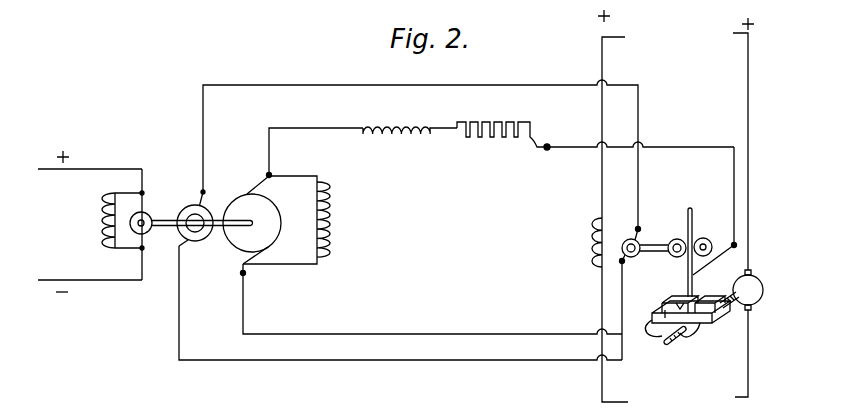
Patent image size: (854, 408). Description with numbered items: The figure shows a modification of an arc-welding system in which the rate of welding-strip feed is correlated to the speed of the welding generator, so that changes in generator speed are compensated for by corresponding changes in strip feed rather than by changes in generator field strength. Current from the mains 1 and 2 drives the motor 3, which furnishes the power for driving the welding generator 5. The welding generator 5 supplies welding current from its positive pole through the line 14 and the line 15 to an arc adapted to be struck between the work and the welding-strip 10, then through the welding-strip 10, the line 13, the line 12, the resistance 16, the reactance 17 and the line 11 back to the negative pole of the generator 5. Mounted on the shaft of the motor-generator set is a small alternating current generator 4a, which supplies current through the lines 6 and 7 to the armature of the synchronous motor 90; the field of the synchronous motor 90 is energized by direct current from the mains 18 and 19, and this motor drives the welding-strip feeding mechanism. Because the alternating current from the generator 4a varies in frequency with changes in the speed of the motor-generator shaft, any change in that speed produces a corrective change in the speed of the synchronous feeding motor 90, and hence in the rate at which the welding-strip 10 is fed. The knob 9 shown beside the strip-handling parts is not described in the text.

The main 1 is at (114, 169).
The main 2 is at (123, 283).
The motor 3 is at (150, 215).
The alternating current generator 4a is at (197, 242).
The welding generator 5 is at (279, 205).
The line 6 is at (358, 85).
The line 7 is at (385, 361).
The switch knob 9 is at (722, 300).
The welding-strip 10 is at (687, 226).
The line 11 is at (330, 128).
The line 12 is at (588, 150).
The line 13 is at (734, 190).
The line 14 is at (421, 327).
The line 15 is at (656, 316).
The resistance 16 is at (492, 139).
The reactance 17 is at (401, 138).
The main 18 is at (620, 40).
The main 19 is at (633, 391).
The synchronous motor 90 is at (633, 258).